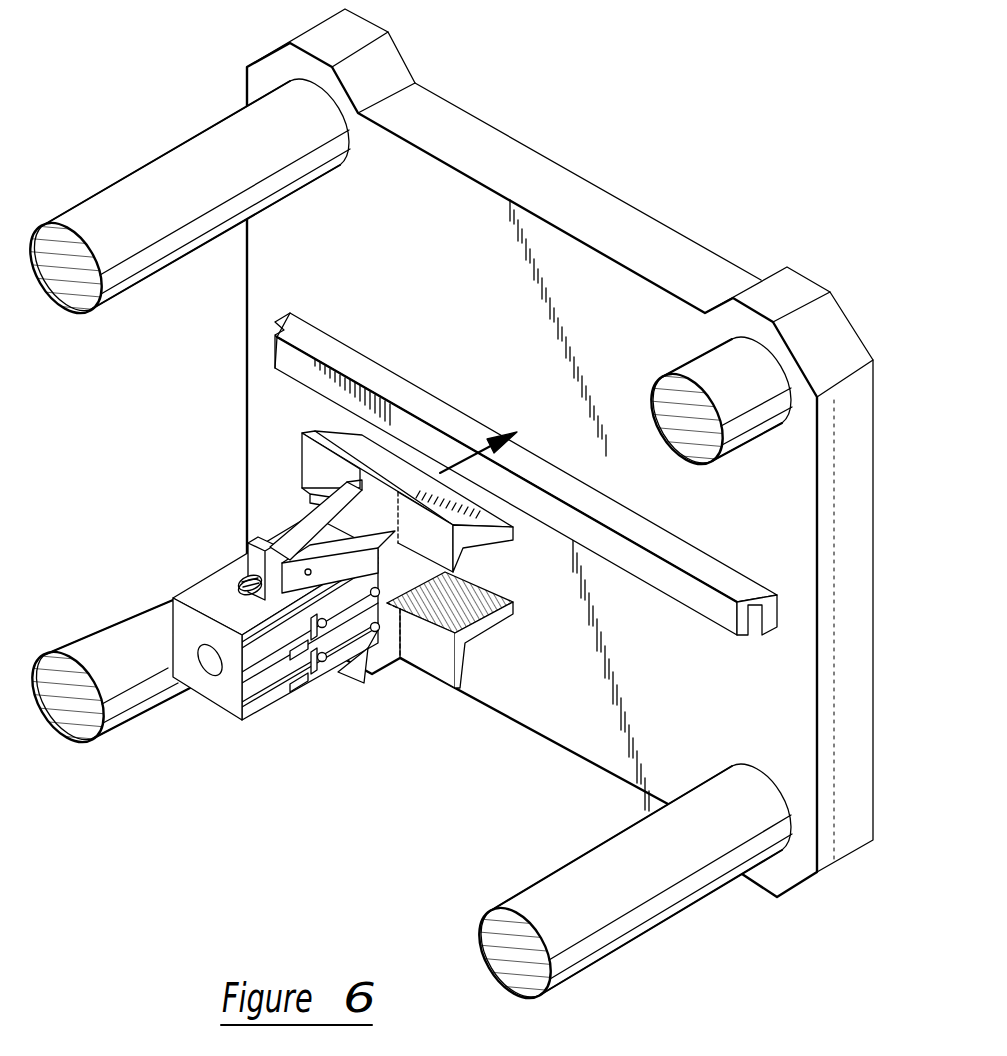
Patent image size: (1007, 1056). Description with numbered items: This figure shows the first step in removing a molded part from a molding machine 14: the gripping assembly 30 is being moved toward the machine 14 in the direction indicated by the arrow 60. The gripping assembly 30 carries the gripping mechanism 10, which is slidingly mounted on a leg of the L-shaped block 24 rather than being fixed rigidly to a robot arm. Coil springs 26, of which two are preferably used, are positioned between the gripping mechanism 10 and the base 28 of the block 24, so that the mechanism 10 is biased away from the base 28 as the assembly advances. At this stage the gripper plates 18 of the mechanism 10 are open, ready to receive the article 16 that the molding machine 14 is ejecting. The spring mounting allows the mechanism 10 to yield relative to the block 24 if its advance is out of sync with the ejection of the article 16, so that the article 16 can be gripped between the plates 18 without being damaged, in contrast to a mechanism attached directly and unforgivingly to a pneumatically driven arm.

The molding machine 14 is at (642, 213).
The article 16 is at (690, 595).
The gripper plates 18 is at (495, 543).
The L-shaped block 24 is at (208, 707).
The coil springs 26 is at (247, 580).
The base 28 is at (183, 630).
The gripping assembly 30 is at (283, 716).
The gripping mechanism 10 is at (267, 540).
The arrow 60 is at (452, 460).